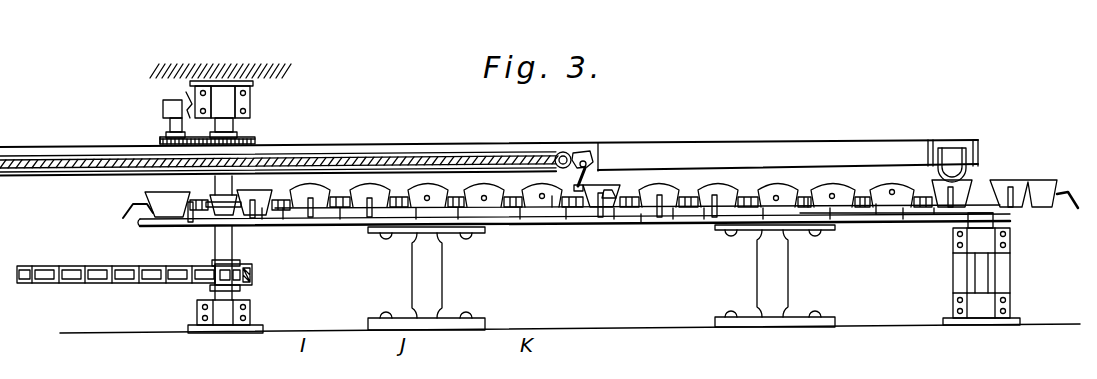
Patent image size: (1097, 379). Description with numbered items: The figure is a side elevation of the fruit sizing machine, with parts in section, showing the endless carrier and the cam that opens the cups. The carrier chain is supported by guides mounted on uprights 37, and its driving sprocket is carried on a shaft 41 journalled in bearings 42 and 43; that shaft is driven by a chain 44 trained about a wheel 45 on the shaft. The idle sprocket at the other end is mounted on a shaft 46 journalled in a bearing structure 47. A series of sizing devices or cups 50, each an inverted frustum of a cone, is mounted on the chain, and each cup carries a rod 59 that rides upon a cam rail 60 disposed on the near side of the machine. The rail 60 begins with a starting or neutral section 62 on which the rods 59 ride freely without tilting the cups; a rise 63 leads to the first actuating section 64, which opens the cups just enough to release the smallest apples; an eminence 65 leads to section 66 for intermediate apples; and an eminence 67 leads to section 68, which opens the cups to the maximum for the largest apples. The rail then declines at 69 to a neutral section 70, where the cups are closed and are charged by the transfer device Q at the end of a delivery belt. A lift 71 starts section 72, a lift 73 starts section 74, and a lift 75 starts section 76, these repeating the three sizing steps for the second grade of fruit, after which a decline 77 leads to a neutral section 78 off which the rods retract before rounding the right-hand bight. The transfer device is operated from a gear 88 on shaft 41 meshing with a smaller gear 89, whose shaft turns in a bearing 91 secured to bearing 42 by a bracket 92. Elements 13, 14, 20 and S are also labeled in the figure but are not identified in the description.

The roller 13 is at (563, 152).
The track rail 14 is at (503, 136).
The rail 20 is at (742, 145).
The uprights 37 is at (427, 298).
The shaft 41 is at (215, 247).
The bearing 42 is at (230, 103).
The bearing 43 is at (232, 312).
The chain 44 is at (82, 258).
The wheel 45 is at (240, 262).
The shaft 46 is at (987, 276).
The bearing structure 47 is at (987, 302).
The sizing devices 50 is at (430, 190).
The rods 59 is at (704, 216).
The cam rail 60 is at (532, 216).
The starting or neutral section 62 is at (262, 219).
The rise 63 is at (283, 216).
The first actuating section 64 is at (340, 212).
The eminence 65 is at (416, 222).
The section 66 is at (458, 216).
The eminence 67 is at (520, 212).
The section 68 is at (552, 200).
The decline 69 is at (566, 216).
The neutral section 70 is at (614, 216).
The lift 71 is at (641, 226).
The section 72 is at (673, 226).
The lift 73 is at (763, 208).
The section 74 is at (808, 200).
The lift 75 is at (830, 210).
The section 76 is at (876, 204).
The decline 77 is at (903, 210).
The neutral section 78 is at (934, 214).
The gear 88 is at (247, 139).
The smaller gear 89 is at (160, 141).
The bearing 91 is at (163, 110).
The bracket 92 is at (622, 183).
The transfer device Q is at (585, 152).
The stop S is at (937, 141).